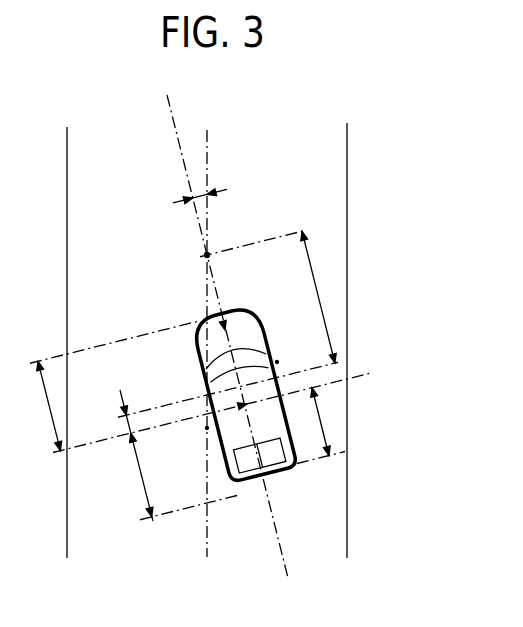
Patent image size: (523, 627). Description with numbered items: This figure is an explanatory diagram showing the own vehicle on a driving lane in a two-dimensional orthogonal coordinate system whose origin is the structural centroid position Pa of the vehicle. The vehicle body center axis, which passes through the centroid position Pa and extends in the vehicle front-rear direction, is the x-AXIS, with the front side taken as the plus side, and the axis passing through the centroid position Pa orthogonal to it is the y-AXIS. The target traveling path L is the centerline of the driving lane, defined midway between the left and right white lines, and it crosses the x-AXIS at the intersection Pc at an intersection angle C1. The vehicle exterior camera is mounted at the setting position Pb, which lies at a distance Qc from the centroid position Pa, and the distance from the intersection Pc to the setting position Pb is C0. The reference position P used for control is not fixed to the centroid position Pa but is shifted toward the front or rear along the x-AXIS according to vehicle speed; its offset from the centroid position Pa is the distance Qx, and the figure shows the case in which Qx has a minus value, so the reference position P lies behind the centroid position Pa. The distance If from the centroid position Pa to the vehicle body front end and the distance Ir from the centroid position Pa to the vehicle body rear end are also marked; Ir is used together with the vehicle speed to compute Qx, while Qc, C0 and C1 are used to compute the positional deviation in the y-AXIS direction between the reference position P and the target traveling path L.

The intersection angle C1 is at (201, 190).
The target traveling path L is at (220, 218).
The intersection Pc is at (205, 257).
The distance from intersection to camera setting position C0 is at (327, 297).
The setting position of vehicle exterior camera Pb is at (277, 362).
The distance between camera setting position and centroid position Qc is at (107, 411).
The distance to vehicle body front end If is at (43, 406).
The distance to vehicle body rear end Ir is at (135, 477).
The centroid position Pa is at (207, 428).
The distance from centroid position to reference position Qx is at (336, 422).
The reference position P is at (297, 463).
The x-axis x-AXIS is at (278, 520).
The y-axis y-AXIS is at (336, 363).